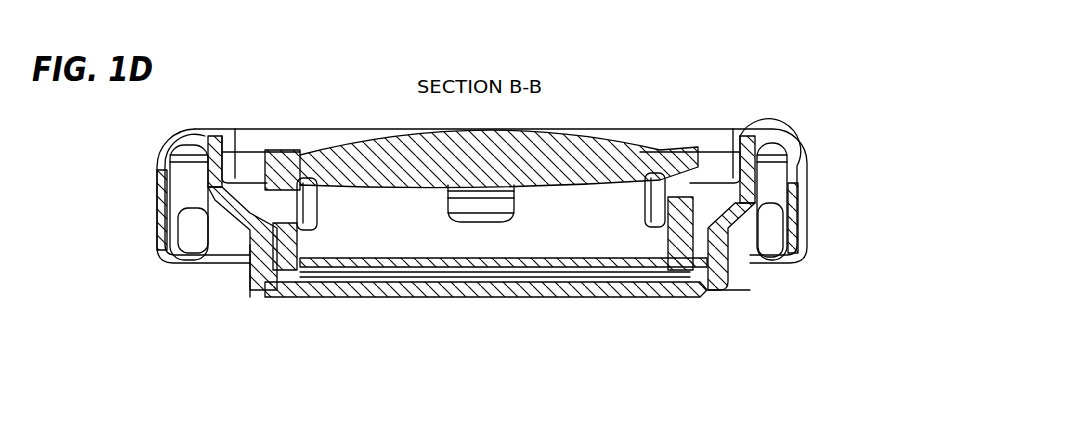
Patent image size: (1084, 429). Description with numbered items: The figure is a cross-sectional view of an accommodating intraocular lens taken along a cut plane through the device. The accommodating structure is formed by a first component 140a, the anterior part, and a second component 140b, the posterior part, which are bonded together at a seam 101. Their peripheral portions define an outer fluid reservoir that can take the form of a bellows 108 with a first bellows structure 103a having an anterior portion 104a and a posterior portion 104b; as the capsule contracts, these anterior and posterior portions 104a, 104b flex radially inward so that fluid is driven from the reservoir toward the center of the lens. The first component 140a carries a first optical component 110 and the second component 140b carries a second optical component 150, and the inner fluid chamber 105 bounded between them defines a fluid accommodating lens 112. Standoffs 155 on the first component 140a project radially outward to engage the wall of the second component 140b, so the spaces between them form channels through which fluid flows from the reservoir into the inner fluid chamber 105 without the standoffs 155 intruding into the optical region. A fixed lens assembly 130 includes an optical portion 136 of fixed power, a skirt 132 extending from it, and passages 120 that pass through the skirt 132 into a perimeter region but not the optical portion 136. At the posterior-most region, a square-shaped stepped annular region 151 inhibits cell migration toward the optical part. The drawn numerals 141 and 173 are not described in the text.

The seam 101 is at (805, 219).
The first bellows structure 103a is at (777, 192).
The anterior portion 104a is at (735, 130).
The posterior portion 104b is at (733, 258).
The inner fluid chamber 105 is at (395, 273).
The bellows 108 is at (693, 297).
The first optical component 110 is at (460, 262).
The fluid accommodating lens 112 is at (368, 280).
The passages 120 is at (306, 172).
The fixed lens assembly 130 is at (540, 142).
The skirt 132 is at (282, 247).
The optical portion 136 is at (400, 155).
The first component 140a is at (183, 145).
The second component 140b is at (160, 260).
The cavity 141 is at (590, 224).
The second optical component 150 is at (553, 290).
The annular region 151 is at (246, 288).
The standoffs 155 is at (250, 223).
The rib 173 is at (728, 202).